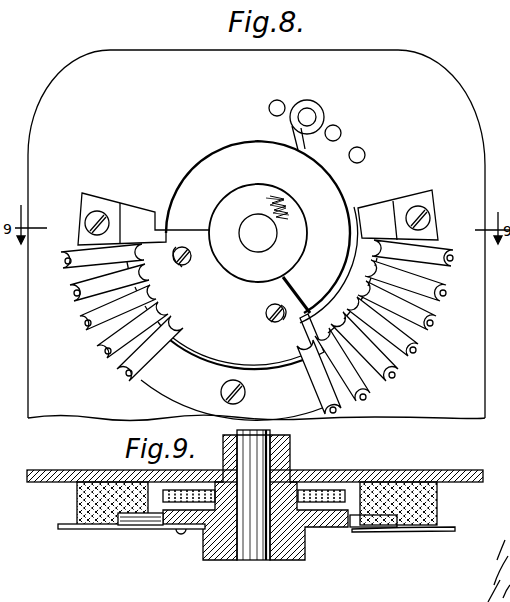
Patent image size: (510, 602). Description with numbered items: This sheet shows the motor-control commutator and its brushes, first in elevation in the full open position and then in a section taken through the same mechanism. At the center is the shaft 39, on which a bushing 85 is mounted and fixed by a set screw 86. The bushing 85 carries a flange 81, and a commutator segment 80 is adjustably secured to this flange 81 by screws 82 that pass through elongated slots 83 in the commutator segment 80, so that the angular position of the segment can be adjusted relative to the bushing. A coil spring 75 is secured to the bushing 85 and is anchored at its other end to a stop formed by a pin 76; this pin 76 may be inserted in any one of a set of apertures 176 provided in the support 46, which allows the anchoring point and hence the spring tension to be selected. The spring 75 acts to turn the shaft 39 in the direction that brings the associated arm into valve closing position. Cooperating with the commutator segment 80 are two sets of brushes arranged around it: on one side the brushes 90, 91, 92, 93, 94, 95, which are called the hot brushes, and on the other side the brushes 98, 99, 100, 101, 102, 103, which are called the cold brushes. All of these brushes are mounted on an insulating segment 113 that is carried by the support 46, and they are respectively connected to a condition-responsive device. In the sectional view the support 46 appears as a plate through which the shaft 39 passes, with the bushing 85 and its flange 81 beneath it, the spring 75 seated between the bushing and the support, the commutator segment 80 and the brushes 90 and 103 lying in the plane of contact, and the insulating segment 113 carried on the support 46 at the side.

In FIG. 8, the shaft 39 is at (270, 242).
In FIG. 9, the shaft 39 is at (266, 561).
In FIG. 8, the support 46 is at (399, 70).
In FIG. 9, the support 46 is at (423, 472).
In FIG. 8, the coil spring 75 is at (293, 132).
In FIG. 9, the coil spring 75 is at (328, 490).
In FIG. 8, the pin 76 is at (318, 116).
In FIG. 8, the commutator segment 80 is at (212, 352).
In FIG. 9, the commutator segment 80 is at (158, 528).
In FIG. 8, the flange 81 is at (208, 166).
In FIG. 9, the flange 81 is at (334, 528).
In FIG. 8, the screws 82 is at (190, 263).
In FIG. 9, the screws 82 is at (181, 534).
In FIG. 8, the elongated slots 83 is at (182, 268).
In FIG. 8, the bushing 85 is at (246, 193).
In FIG. 9, the bushing 85 is at (300, 552).
In FIG. 8, the set screw 86 is at (280, 201).
In FIG. 8, the brush 90 is at (62, 259).
In FIG. 9, the brush 90 is at (77, 529).
In FIG. 8, the brush 91 is at (70, 293).
In FIG. 8, the brush 92 is at (82, 323).
In FIG. 8, the brush 93 is at (104, 352).
In FIG. 8, the brush 94 is at (129, 375).
In FIG. 8, the brush 95 is at (343, 411).
In FIG. 8, the brush 98 is at (371, 397).
In FIG. 8, the brush 99 is at (400, 376).
In FIG. 8, the brush 100 is at (421, 350).
In FIG. 8, the brush 101 is at (438, 323).
In FIG. 8, the brush 102 is at (450, 293).
In FIG. 8, the brush 103 is at (460, 254).
In FIG. 9, the brush 103 is at (416, 531).
In FIG. 8, the insulating segment 113 is at (430, 197).
In FIG. 9, the insulating segment 113 is at (438, 511).
In FIG. 8, the apertures 176 is at (277, 100).